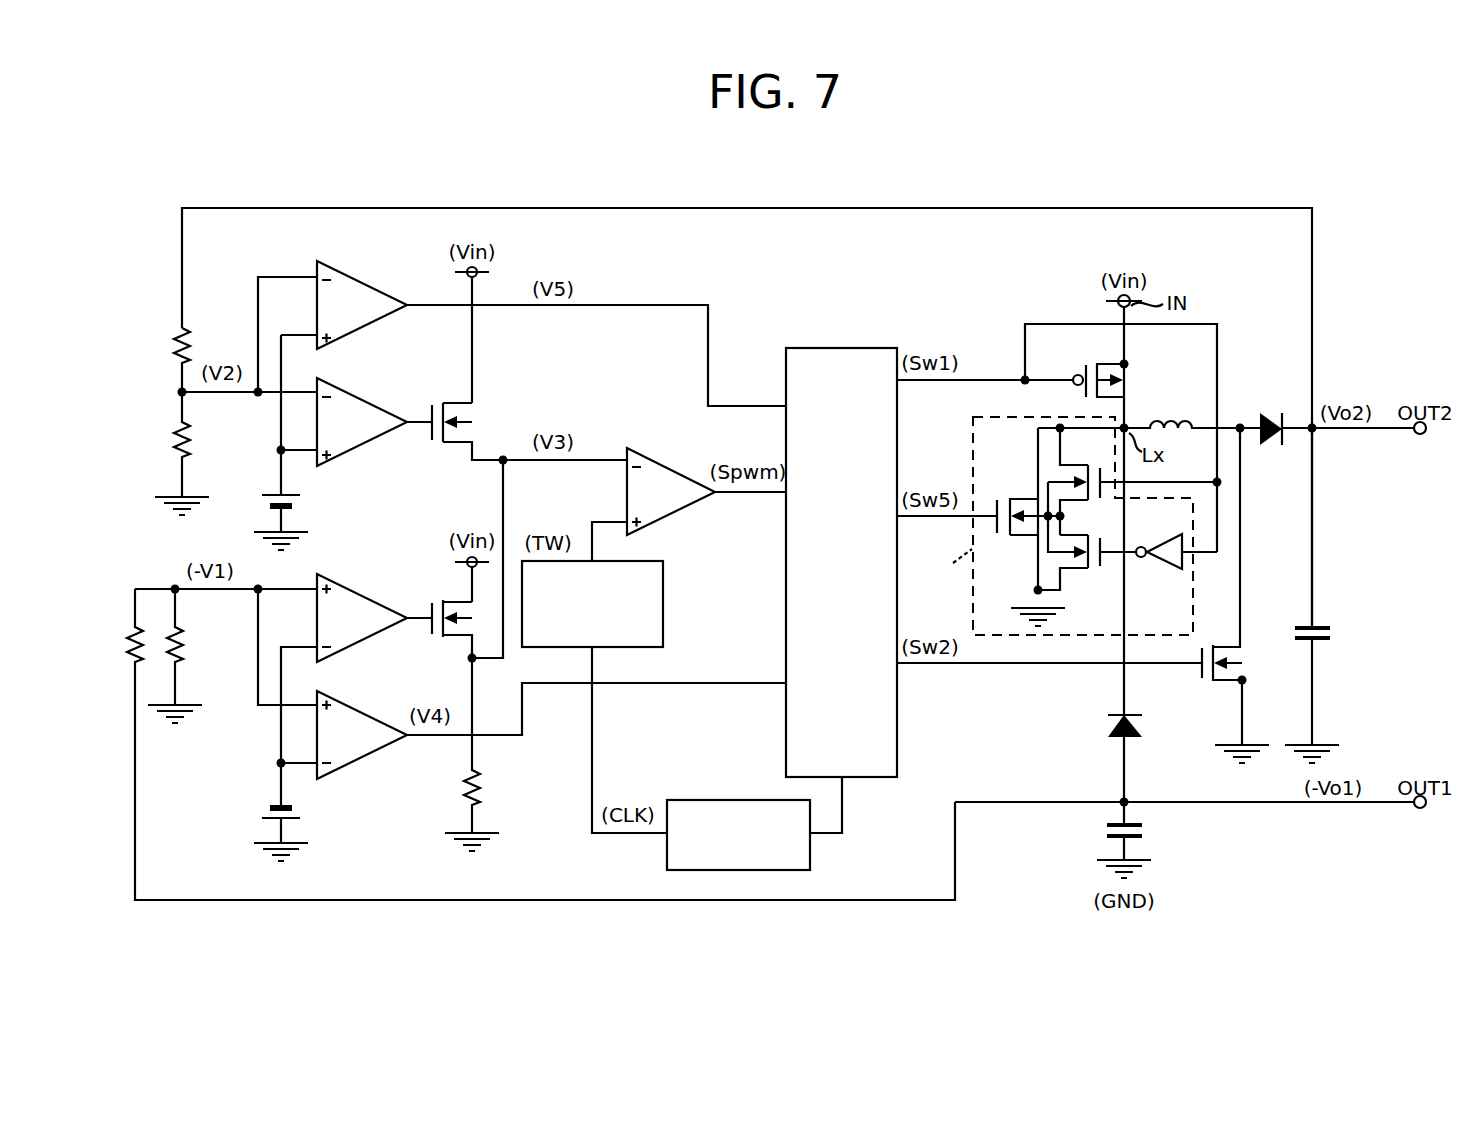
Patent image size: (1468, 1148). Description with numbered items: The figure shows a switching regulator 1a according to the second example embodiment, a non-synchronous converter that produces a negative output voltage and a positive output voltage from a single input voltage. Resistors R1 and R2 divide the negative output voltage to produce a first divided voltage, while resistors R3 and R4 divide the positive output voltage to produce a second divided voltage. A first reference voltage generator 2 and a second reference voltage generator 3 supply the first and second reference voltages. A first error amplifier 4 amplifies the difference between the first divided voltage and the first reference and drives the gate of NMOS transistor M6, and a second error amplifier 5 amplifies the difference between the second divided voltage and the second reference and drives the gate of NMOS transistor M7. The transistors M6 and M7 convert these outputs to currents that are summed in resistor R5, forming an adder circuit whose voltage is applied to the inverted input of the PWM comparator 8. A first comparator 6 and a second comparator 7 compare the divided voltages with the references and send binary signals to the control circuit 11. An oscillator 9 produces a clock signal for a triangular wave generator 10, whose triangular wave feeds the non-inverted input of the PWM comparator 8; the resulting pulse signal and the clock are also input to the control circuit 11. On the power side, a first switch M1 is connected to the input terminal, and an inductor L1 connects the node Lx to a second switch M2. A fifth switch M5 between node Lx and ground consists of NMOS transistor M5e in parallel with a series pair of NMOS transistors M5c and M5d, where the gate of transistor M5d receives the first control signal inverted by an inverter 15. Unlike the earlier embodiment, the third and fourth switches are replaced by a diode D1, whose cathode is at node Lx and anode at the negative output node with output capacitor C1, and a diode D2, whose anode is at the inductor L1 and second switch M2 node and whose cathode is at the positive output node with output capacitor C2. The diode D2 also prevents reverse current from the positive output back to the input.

The switching regulator 1a is at (966, 200).
The first reference voltage generator 2 is at (263, 809).
The second reference voltage generator 3 is at (263, 499).
The first error amplifier 4 is at (365, 597).
The second error amplifier 5 is at (365, 401).
The first comparator 6 is at (365, 714).
The second comparator 7 is at (365, 284).
The PWM comparator 8 is at (658, 463).
The oscillator 9 is at (685, 800).
The triangular wave generator 10 is at (664, 585).
The control circuit 11 is at (870, 348).
The inverter 15 is at (1162, 562).
The first switch M1 is at (1098, 368).
The second switch M2 is at (1235, 595).
The fifth switch M5 is at (1069, 526).
The NMOS transistor M5c is at (1132, 481).
The NMOS transistor M5d is at (1087, 541).
The NMOS transistor M5e is at (1023, 504).
The NMOS transistor M6 is at (439, 616).
The NMOS transistor M7 is at (455, 419).
The inductor L1 is at (1192, 408).
The diode D1 is at (1141, 615).
The diode D2 is at (1336, 413).
The output capacitor C1 is at (1135, 840).
The output capacitor C2 is at (1323, 595).
The resistor R1 is at (526, 744).
The resistor R2 is at (183, 656).
The resistor R3 is at (164, 360).
The resistor R4 is at (174, 453).
The resistor R5 is at (479, 754).